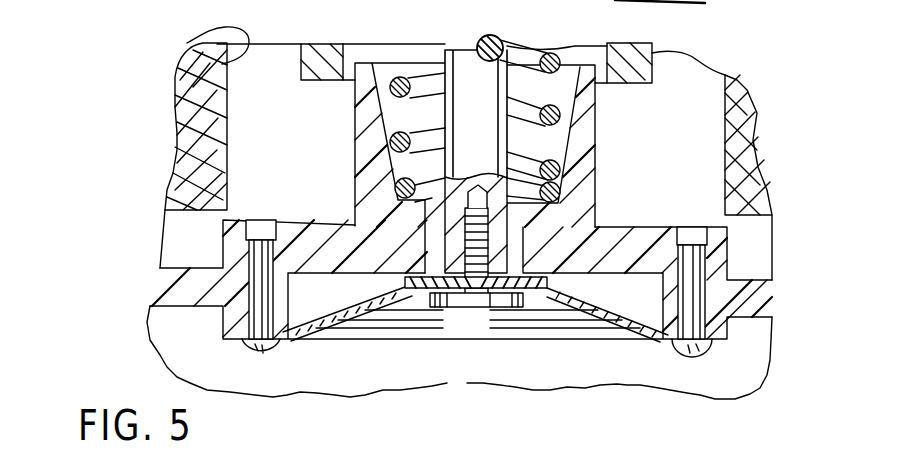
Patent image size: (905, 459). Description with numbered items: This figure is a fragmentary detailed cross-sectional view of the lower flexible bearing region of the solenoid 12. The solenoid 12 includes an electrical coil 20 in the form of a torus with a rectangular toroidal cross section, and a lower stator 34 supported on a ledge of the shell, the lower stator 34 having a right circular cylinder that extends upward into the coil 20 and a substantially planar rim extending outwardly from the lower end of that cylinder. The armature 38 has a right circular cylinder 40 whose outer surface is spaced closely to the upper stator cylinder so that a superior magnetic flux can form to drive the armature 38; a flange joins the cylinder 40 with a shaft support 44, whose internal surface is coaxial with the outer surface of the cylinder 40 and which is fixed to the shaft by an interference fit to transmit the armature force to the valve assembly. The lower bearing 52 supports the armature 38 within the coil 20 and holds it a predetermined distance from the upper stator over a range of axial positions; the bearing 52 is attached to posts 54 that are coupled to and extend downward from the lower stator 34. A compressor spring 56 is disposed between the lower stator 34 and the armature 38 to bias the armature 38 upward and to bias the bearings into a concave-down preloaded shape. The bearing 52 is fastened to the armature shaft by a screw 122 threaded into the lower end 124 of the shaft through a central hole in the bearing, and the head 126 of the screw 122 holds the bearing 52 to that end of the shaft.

The solenoid 12 is at (108, 7).
The electrical coil 20 is at (187, 43).
The lower stator 34 is at (760, 257).
The armature 38 is at (652, 60).
The right circular cylinder 40 is at (668, 74).
The shaft support 44 is at (672, 5).
The bearing 52 is at (621, 330).
The posts 54 is at (727, 333).
The compressor spring 56 is at (575, 142).
The screw 122 is at (490, 236).
The lower end 124 is at (448, 307).
The head 126 is at (480, 307).